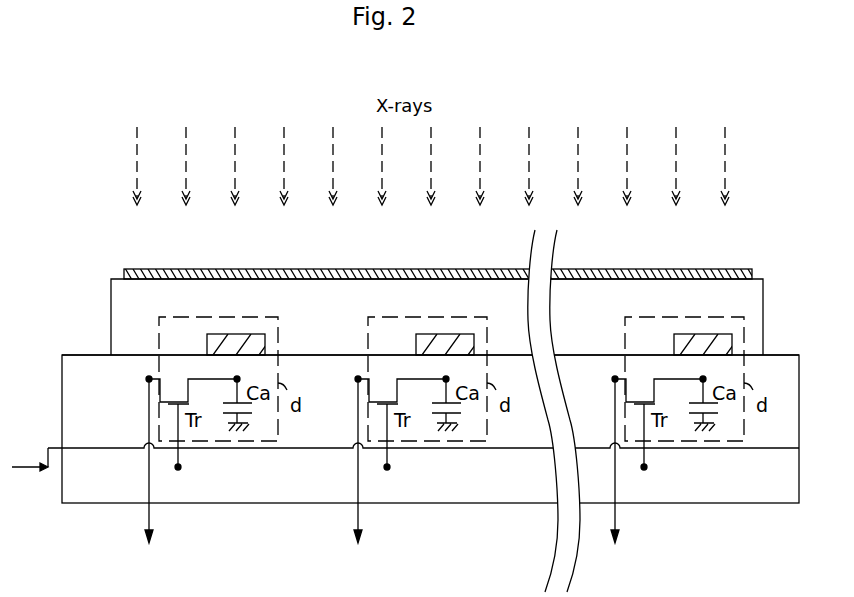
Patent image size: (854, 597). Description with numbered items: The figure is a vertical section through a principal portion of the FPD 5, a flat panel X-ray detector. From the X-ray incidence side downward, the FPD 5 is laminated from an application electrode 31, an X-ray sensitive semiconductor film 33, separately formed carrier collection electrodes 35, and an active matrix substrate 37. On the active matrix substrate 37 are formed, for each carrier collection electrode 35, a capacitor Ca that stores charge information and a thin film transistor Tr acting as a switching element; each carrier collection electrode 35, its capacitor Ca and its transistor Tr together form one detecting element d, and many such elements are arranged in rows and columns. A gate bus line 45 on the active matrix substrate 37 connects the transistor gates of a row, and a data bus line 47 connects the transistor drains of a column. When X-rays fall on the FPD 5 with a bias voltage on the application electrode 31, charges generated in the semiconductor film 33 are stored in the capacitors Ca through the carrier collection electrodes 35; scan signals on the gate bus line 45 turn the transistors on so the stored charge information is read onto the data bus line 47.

The FPD 5 is at (34, 221).
The application electrode 31 is at (206, 268).
The X-ray sensitive semiconductor film 33 is at (110, 308).
The carrier collection electrode 35 is at (267, 348).
The active matrix substrate 37 is at (61, 381).
The gate bus line 45 is at (30, 468).
The data bus line 47 is at (150, 511).